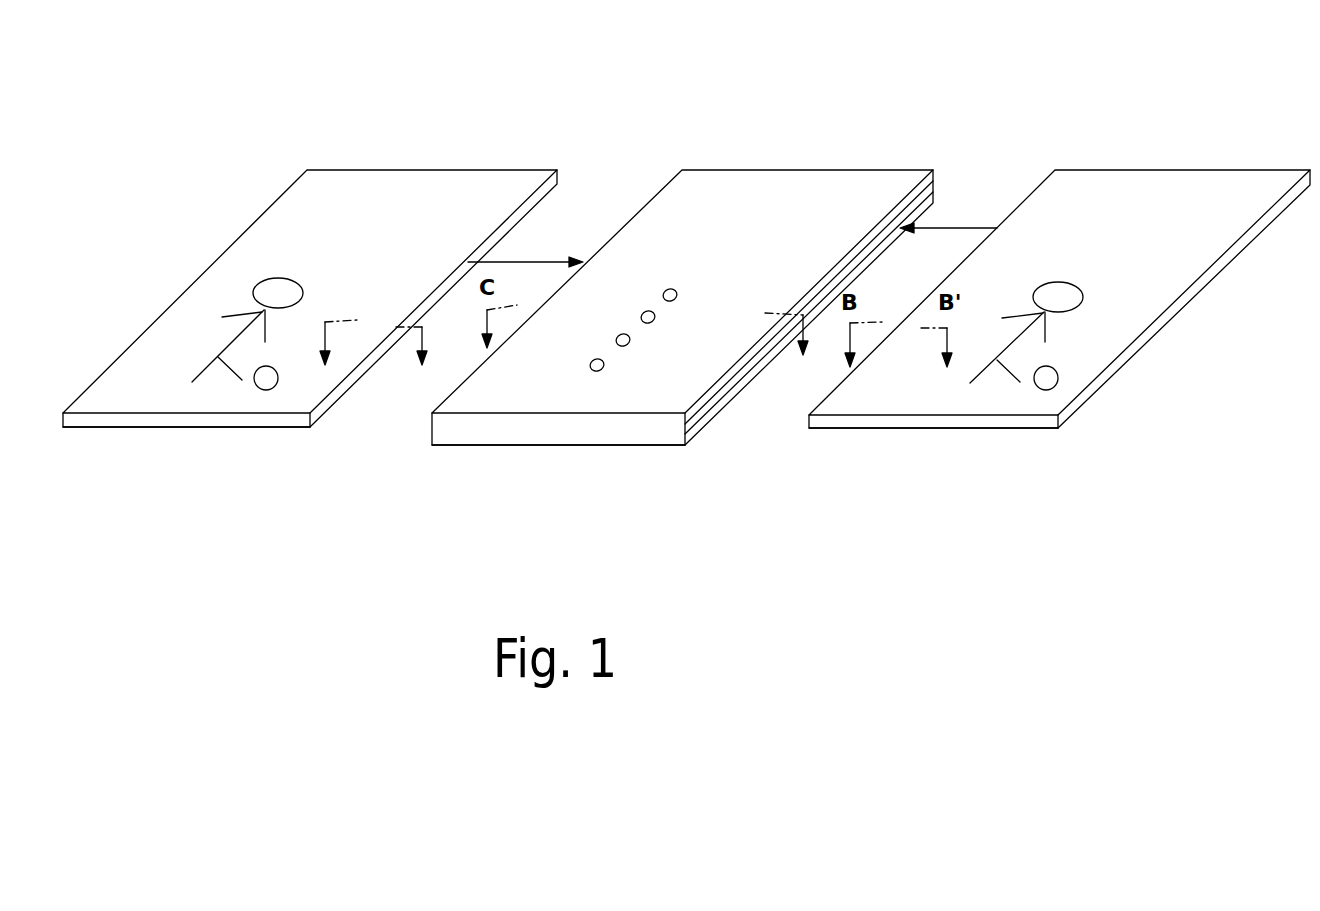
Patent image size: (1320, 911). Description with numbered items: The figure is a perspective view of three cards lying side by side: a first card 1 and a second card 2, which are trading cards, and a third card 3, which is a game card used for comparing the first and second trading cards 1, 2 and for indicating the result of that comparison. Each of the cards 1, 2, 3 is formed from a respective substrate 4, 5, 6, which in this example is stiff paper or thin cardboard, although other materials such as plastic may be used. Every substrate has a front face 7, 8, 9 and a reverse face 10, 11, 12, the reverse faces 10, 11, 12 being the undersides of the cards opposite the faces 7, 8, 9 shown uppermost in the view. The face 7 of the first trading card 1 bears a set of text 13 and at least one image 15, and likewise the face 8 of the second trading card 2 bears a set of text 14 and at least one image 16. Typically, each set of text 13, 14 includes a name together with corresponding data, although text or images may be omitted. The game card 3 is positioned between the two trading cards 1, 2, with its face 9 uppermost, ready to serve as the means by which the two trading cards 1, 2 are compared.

The first card 1 is at (463, 107).
The second card 2 is at (1187, 107).
The third card 3 is at (812, 107).
The substrate 4 is at (90, 420).
The substrate 5 is at (828, 422).
The substrate 6 is at (448, 433).
The face 7 is at (143, 397).
The face 8 is at (985, 290).
The face 9 is at (668, 230).
The reverse face 10 is at (143, 428).
The reverse face 11 is at (940, 430).
The reverse face 12 is at (550, 448).
The set of text 13 is at (327, 220).
The set of text 14 is at (1108, 200).
The image 15 is at (278, 292).
The image 16 is at (1045, 342).